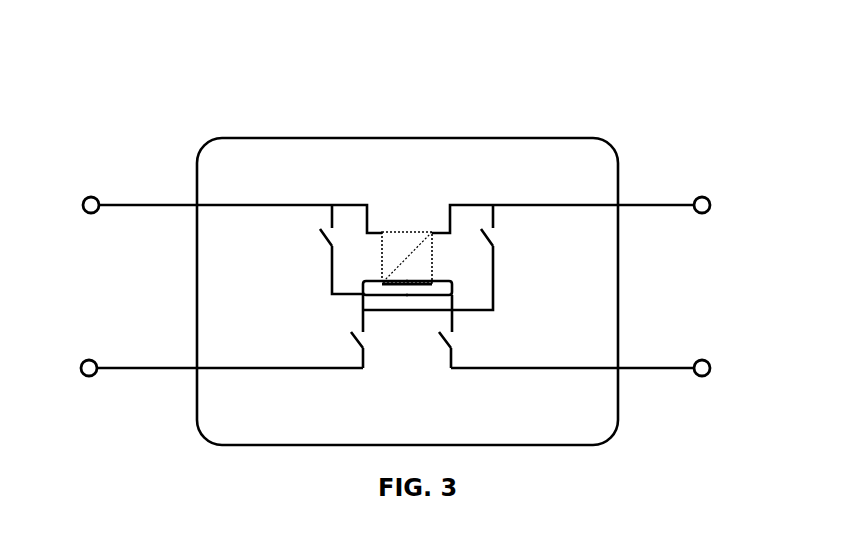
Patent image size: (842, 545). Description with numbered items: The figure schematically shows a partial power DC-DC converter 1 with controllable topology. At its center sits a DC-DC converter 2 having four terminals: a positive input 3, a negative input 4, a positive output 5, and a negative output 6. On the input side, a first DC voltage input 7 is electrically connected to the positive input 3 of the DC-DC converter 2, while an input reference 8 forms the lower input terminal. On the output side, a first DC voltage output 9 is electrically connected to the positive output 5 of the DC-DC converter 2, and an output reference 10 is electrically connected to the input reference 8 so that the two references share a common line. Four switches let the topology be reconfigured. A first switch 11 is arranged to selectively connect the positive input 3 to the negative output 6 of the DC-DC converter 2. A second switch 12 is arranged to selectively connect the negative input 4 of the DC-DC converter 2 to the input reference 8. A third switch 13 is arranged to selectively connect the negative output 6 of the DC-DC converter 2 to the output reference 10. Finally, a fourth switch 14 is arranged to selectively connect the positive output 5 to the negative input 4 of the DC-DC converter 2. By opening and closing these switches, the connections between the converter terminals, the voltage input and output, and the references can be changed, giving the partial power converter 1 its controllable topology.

The partial power DC-DC converter 1 is at (385, 104).
The DC-DC converter 2 is at (407, 232).
The positive input 3 is at (375, 232).
The negative input 4 is at (373, 279).
The positive output 5 is at (437, 232).
The negative output 6 is at (440, 279).
The first DC voltage input 7 is at (157, 204).
The input reference 8 is at (147, 367).
The first DC voltage output 9 is at (656, 204).
The output reference 10 is at (653, 367).
The first switch 11 is at (330, 246).
The second switch 12 is at (359, 344).
The third switch 13 is at (454, 341).
The fourth switch 14 is at (494, 241).